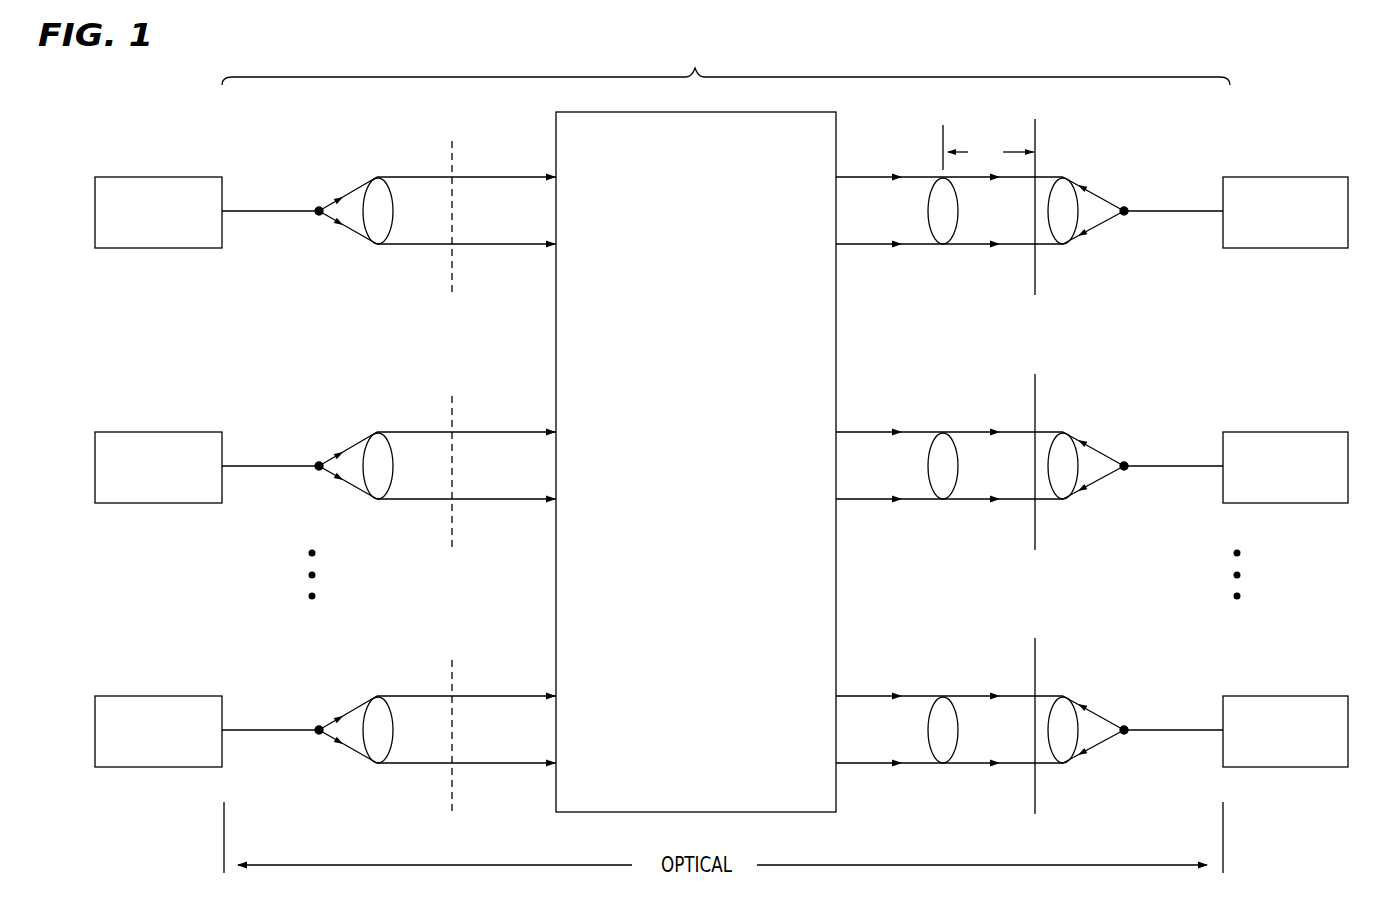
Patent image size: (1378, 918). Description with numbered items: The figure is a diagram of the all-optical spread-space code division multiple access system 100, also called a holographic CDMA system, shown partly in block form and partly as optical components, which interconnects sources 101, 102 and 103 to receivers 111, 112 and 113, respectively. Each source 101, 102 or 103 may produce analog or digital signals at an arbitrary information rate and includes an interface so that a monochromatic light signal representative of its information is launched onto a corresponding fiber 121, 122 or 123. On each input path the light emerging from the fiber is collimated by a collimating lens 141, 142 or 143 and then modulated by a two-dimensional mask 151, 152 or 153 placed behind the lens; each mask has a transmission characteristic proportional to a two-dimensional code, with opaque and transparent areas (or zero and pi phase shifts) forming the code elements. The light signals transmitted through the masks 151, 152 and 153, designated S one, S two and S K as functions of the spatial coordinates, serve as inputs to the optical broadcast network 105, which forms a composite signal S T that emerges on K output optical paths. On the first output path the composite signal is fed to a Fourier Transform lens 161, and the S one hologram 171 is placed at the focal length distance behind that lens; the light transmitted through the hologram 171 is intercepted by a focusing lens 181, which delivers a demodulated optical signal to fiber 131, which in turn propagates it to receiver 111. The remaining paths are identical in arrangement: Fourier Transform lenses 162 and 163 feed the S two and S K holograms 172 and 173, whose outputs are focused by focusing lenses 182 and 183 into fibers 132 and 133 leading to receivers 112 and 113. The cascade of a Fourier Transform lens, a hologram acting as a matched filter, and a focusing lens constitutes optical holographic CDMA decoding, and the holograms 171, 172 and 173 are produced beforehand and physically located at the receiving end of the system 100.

The spread-space CDMA system 100 is at (712, 24).
The optical broadcast network 105 is at (836, 116).
The source 101 is at (152, 177).
The source 102 is at (152, 432).
The source 103 is at (152, 696).
The receiver 111 is at (1290, 177).
The receiver 112 is at (1290, 432).
The receiver 113 is at (1290, 696).
The fiber 121 is at (271, 217).
The fiber 122 is at (271, 472).
The fiber 123 is at (271, 736).
The fiber 131 is at (1190, 214).
The fiber 132 is at (1190, 469).
The fiber 133 is at (1190, 733).
The collimating lens 141 is at (377, 177).
The collimating lens 142 is at (377, 432).
The collimating lens 143 is at (377, 696).
The mask 151 is at (453, 285).
The mask 152 is at (453, 540).
The mask 153 is at (453, 804).
The Fourier Transform lens 161 is at (940, 175).
The Fourier Transform lens 162 is at (940, 430).
The Fourier Transform lens 163 is at (940, 694).
The hologram 171 is at (1035, 282).
The hologram 172 is at (1035, 537).
The hologram 173 is at (1035, 801).
The focusing lens 181 is at (1066, 178).
The focusing lens 182 is at (1066, 433).
The focusing lens 183 is at (1066, 697).